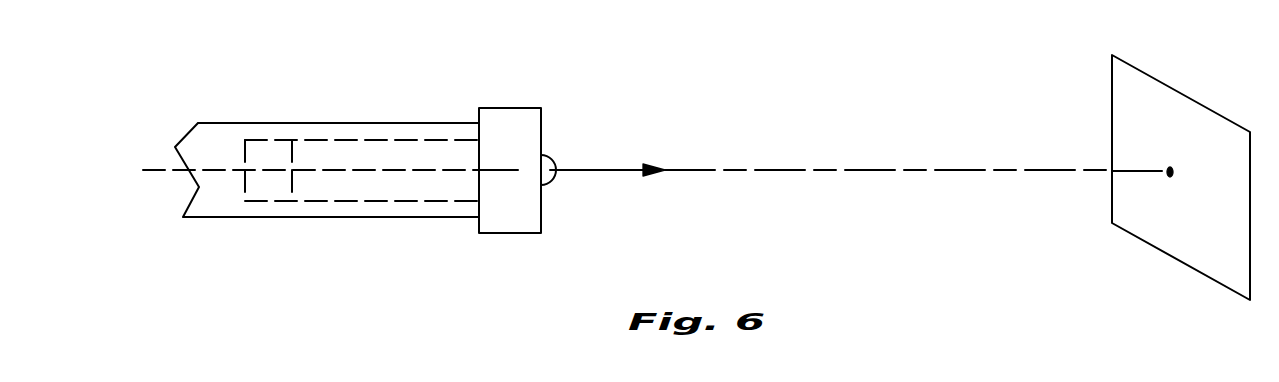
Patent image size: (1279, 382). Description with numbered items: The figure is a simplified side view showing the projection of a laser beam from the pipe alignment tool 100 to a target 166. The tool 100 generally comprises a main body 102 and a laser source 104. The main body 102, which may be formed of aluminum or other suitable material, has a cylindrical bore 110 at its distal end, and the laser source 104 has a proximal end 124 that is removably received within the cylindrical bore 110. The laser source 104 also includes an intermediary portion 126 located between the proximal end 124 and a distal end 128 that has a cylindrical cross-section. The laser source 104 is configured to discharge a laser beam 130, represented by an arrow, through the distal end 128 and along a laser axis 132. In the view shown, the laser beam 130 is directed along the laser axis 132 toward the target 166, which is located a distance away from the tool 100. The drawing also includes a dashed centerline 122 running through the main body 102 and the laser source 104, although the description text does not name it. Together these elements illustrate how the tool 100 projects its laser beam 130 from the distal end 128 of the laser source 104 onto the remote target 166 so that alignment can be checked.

The pipe alignment tool 100 is at (149, 95).
The main body 102 is at (213, 220).
The laser source 104 is at (507, 115).
The cylindrical bore 110 is at (260, 140).
The longitudinal axis 122 is at (157, 165).
The proximal end 124 is at (317, 188).
The intermediary portion 126 is at (368, 140).
The distal end 128 is at (505, 223).
The laser beam 130 is at (588, 170).
The laser axis 132 is at (860, 170).
The target 166 is at (1215, 140).